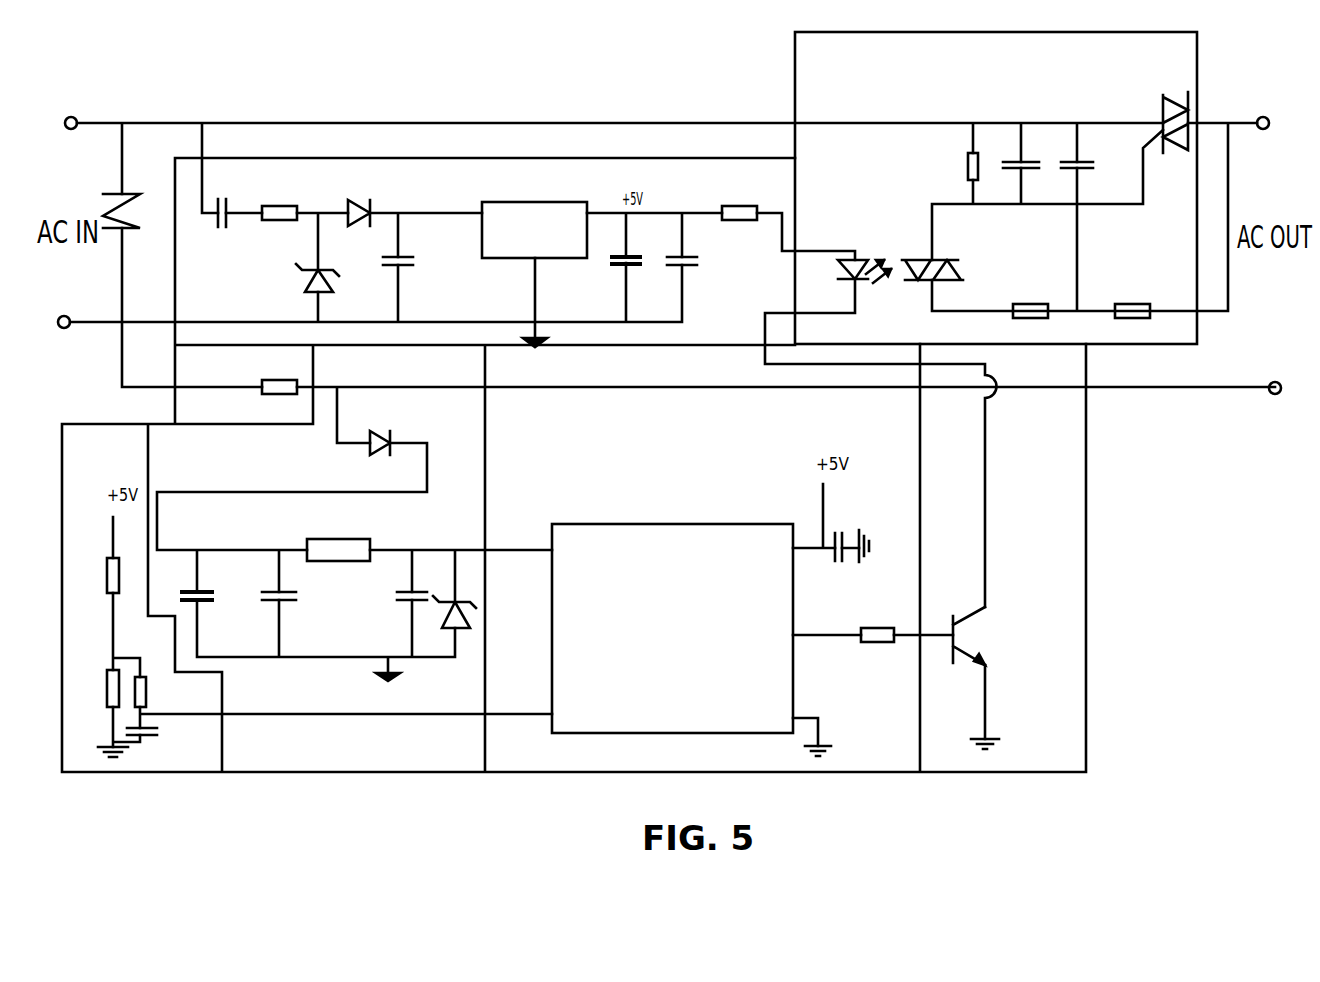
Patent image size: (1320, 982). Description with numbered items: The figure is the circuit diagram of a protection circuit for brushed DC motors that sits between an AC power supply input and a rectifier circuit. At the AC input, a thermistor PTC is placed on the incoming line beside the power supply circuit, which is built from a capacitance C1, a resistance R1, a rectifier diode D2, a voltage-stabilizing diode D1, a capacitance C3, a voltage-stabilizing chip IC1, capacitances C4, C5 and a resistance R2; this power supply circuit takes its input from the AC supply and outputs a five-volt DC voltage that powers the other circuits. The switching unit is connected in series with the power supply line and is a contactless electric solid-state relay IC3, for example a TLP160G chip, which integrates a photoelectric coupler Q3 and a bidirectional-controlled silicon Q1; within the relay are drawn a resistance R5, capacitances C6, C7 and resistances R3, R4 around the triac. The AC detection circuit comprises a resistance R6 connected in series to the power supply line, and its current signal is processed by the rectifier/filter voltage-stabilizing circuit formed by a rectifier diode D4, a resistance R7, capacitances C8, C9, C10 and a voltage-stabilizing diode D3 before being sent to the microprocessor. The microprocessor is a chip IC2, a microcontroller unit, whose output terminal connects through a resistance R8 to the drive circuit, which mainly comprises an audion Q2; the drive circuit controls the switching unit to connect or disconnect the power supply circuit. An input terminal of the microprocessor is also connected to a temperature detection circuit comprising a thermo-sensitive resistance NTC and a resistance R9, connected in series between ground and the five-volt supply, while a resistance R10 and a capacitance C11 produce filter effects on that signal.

The PTC thermistor PTC is at (135, 211).
The capacitance C1 is at (225, 225).
The resistance R1 is at (279, 197).
The rectifier diode D2 is at (356, 200).
The voltage-stabilizing diode D1 is at (308, 278).
The capacitance C3 is at (408, 261).
The voltage-stabilizing chip IC1 is at (534, 230).
The capacitance C4 is at (616, 273).
The capacitance C5 is at (671, 273).
The resistance R2 is at (739, 197).
The electric solid-state relay IC3 is at (996, 188).
The bidirectional-controlled silicon Q1 is at (1175, 109).
The resistor R5 is at (957, 166).
The capacitor C6 is at (1029, 164).
The capacitor C7 is at (1084, 164).
The integrated photoelectric coupler Q3 is at (885, 278).
The resistor R3 is at (1030, 295).
The resistor R4 is at (1132, 295).
The resistance R6 is at (279, 372).
The rectifier diode D4 is at (374, 427).
The thermo-sensitive resistance NTC is at (94, 575).
The resistance R7 is at (338, 535).
The capacitance C8 is at (209, 597).
The capacitance C9 is at (288, 592).
The capacitance C10 is at (397, 599).
The voltage-stabilizing diode D3 is at (470, 614).
The chip IC2 is at (672, 628).
The resistance R9 is at (98, 688).
The resistance R10 is at (157, 694).
The capacitance C11 is at (153, 731).
The resistor R8 is at (877, 619).
The audion Q2 is at (958, 638).